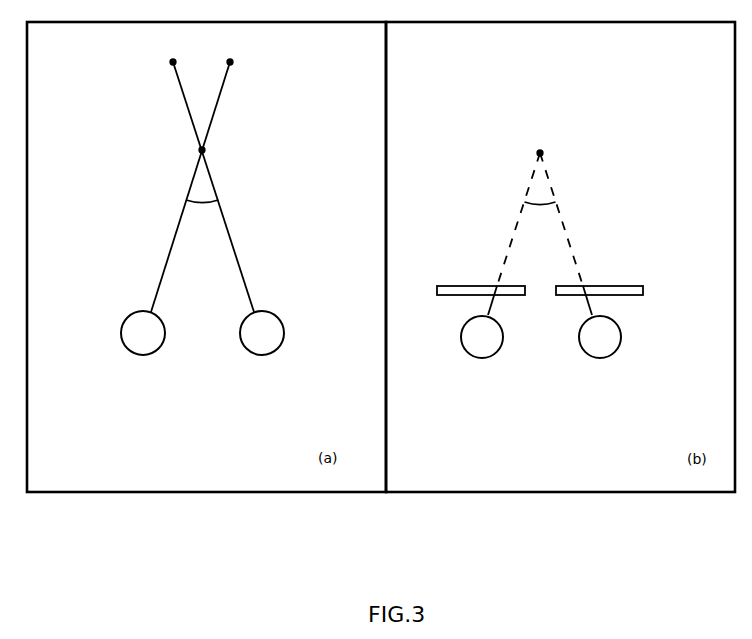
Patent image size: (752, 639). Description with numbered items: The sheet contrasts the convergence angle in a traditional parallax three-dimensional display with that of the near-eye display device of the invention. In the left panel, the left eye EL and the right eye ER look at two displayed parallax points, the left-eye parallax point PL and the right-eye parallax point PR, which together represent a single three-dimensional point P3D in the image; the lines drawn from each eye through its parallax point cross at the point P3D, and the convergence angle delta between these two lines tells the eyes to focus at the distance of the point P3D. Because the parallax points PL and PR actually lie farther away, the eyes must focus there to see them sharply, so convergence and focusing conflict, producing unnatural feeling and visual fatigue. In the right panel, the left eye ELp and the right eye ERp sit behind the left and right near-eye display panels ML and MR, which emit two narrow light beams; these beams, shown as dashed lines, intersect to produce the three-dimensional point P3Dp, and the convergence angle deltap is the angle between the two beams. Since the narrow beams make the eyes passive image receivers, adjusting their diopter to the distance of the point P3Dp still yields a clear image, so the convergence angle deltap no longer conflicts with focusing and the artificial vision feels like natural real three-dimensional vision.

In FIG. 3a, the right-eye parallax point PR is at (155, 61).
In FIG. 3a, the left-eye parallax point PL is at (245, 59).
In FIG. 3a, the 3D point P3D is at (202, 187).
In FIG. 3a, the convergence angle delta is at (202, 215).
In FIG. 3a, the left eye EL is at (143, 352).
In FIG. 3a, the right eye ER is at (262, 352).
In FIG. 3b, the 3D point P3Dp is at (542, 211).
In FIG. 3b, the convergence angle deltap is at (540, 217).
In FIG. 3b, the left near-eye display panel ML is at (474, 277).
In FIG. 3b, the right near-eye display panel MR is at (601, 277).
In FIG. 3b, the left eye ELp is at (482, 340).
In FIG. 3b, the right eye ERp is at (600, 340).